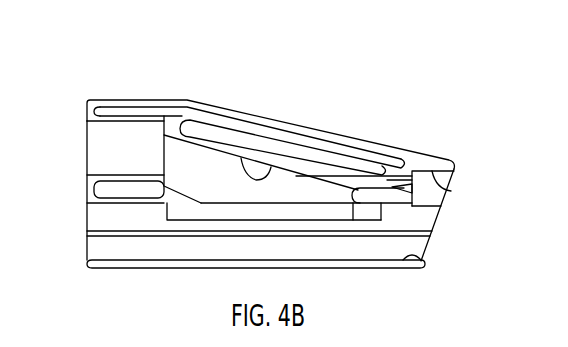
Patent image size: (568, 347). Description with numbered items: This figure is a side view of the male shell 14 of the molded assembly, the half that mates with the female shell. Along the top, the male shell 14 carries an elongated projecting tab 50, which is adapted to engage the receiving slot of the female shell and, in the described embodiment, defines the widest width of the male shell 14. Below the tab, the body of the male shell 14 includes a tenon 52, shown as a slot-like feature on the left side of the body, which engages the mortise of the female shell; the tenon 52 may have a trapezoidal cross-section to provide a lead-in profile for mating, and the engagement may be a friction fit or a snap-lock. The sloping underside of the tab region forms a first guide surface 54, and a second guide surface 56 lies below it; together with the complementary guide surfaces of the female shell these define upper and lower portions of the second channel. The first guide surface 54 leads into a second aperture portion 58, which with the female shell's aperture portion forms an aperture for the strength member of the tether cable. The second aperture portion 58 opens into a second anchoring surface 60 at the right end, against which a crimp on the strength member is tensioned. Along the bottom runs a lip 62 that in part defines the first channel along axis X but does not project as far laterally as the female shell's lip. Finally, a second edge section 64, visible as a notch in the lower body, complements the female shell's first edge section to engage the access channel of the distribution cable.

The male shell 14 is at (207, 101).
The elongated projecting tab 50 is at (346, 148).
The tenon 52 is at (117, 191).
The first guide surface 54 is at (263, 169).
The second guide surface 56 is at (183, 181).
The second aperture portion 58 is at (408, 183).
The second anchoring surface 60 is at (451, 186).
The lip 62 is at (421, 262).
The second edge section 64 is at (146, 209).